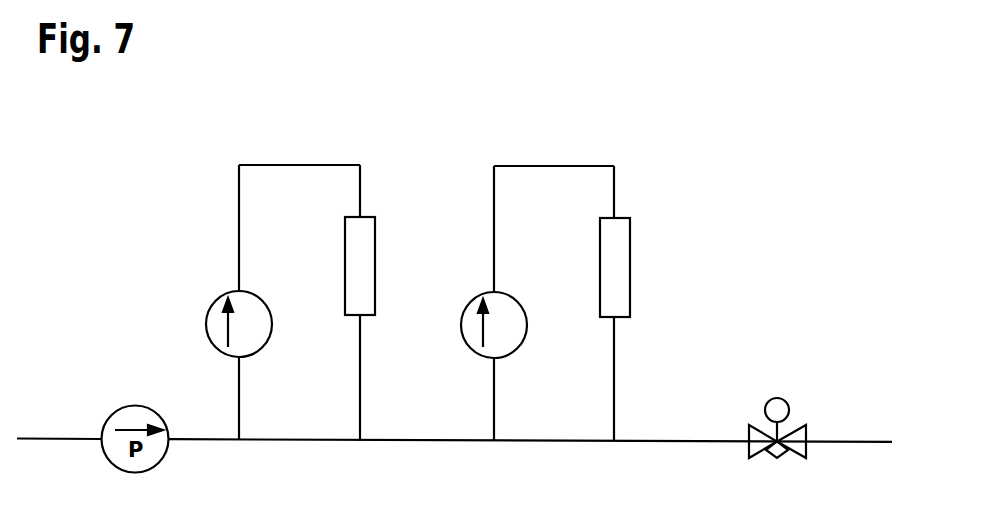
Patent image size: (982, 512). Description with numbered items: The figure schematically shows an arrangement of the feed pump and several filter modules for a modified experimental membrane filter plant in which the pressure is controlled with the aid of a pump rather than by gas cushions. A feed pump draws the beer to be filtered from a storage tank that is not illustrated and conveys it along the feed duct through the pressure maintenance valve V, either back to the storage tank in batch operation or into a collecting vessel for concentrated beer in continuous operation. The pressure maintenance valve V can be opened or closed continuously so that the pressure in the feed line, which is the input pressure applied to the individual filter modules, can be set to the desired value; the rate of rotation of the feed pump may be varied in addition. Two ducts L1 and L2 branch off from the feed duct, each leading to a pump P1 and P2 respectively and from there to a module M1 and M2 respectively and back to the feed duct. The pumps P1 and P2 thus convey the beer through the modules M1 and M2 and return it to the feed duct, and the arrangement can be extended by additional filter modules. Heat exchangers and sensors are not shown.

The pump P1 is at (218, 305).
The module M1 is at (354, 260).
The pump P2 is at (472, 307).
The module M2 is at (608, 262).
The duct L1 is at (238, 412).
The duct L2 is at (493, 412).
The pressure maintenance valve V is at (777, 449).